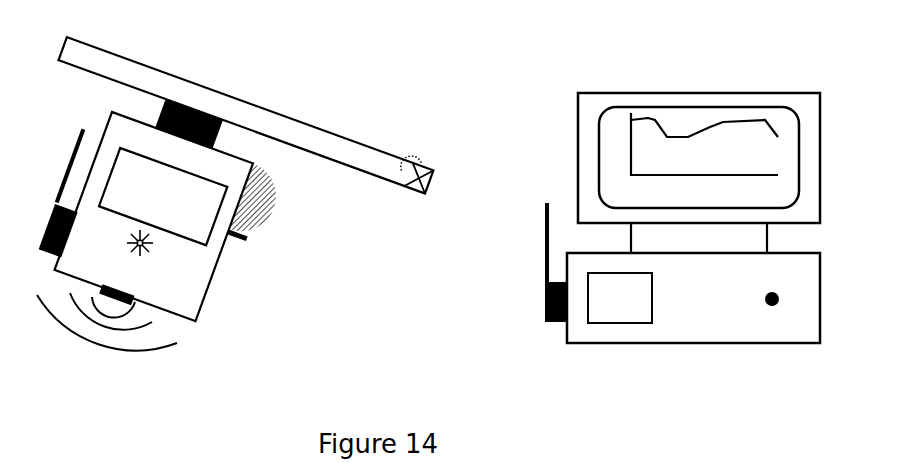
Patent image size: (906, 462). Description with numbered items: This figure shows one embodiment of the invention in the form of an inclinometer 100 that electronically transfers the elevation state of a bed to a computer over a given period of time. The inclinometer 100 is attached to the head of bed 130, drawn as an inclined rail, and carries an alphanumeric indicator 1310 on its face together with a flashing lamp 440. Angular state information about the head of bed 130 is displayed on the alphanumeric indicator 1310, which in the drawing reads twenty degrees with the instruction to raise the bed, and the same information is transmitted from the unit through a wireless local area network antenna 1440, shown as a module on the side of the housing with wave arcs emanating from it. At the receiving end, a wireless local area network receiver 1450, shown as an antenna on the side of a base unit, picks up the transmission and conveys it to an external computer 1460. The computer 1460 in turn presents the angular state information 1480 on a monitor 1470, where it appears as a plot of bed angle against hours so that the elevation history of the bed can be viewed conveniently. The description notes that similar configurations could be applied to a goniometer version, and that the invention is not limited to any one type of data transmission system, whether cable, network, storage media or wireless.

The head of bed 130 is at (275, 113).
The inclinometer 100 is at (200, 273).
The alphanumeric indicator 1310 is at (127, 173).
The flashing lamp 440 is at (140, 256).
The wireless local area network antenna 1440 is at (42, 253).
The monitor 1470 is at (598, 92).
The angular state information 1480 is at (746, 123).
The wireless local area network receiver 1450 is at (540, 297).
The external computer 1460 is at (673, 302).